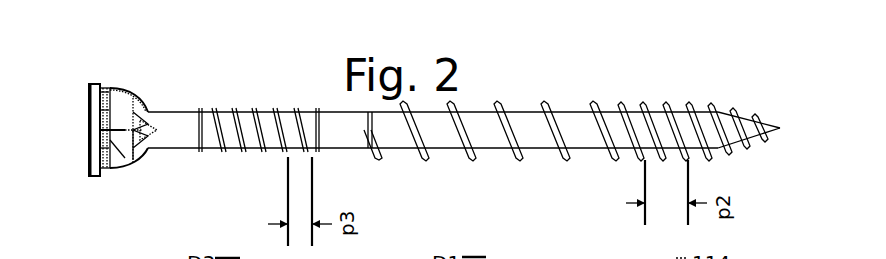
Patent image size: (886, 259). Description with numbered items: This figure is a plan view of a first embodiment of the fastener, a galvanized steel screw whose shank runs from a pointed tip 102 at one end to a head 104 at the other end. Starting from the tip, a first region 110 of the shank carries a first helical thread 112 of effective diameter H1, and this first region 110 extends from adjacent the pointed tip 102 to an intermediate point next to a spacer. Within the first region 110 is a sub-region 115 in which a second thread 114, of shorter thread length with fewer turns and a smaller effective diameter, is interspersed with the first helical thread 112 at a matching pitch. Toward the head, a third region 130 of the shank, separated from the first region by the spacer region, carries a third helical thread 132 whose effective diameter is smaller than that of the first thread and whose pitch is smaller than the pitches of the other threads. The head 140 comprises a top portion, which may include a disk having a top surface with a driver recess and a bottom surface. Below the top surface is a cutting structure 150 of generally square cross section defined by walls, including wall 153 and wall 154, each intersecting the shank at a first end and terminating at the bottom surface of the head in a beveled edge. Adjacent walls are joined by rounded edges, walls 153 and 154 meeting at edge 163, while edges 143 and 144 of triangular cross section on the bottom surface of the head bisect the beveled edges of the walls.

The pointed tip 102 is at (786, 124).
The head 104 is at (84, 94).
The first region 110 is at (780, 155).
The first helical thread 112 is at (491, 95).
The second thread 114 is at (690, 150).
The sub-region 115 is at (782, 95).
The third region 130 is at (318, 152).
The third helical thread 132 is at (276, 92).
The head 140 is at (113, 85).
The edge 143 is at (100, 147).
The edge 144 is at (100, 112).
The cutting structure 150 is at (72, 217).
The wall 153 is at (161, 179).
The wall 154 is at (123, 112).
The edge 163 is at (180, 165).